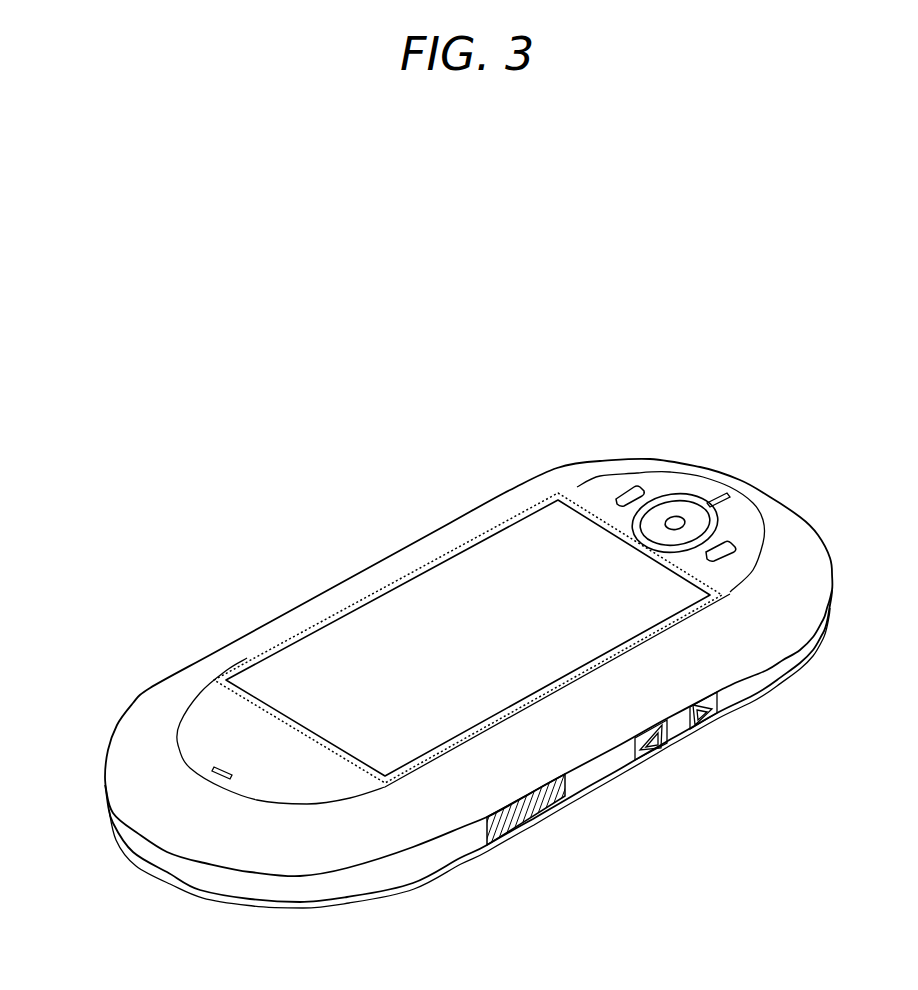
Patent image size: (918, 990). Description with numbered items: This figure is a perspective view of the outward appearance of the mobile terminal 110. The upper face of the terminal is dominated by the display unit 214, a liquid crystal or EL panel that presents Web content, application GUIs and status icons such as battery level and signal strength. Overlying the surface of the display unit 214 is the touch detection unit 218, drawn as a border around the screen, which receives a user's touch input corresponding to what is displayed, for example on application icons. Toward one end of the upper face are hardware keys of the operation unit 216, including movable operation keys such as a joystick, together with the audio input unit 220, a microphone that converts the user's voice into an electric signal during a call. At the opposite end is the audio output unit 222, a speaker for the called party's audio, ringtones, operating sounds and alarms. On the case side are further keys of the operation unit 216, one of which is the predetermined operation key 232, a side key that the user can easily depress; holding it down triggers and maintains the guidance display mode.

The mobile terminal 110 is at (433, 439).
The display unit 214 is at (493, 630).
The operation unit 216 is at (632, 497).
The touch detection unit 218 is at (337, 610).
The audio input unit 220 is at (720, 497).
The audio output unit 222 is at (227, 762).
The predetermined operation key (side key) 232 is at (535, 819).